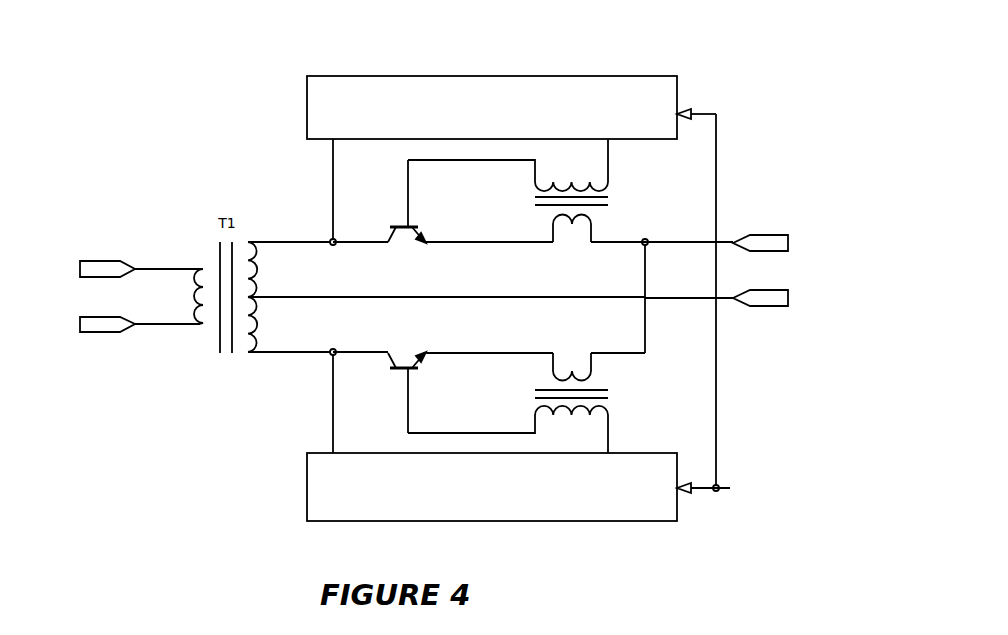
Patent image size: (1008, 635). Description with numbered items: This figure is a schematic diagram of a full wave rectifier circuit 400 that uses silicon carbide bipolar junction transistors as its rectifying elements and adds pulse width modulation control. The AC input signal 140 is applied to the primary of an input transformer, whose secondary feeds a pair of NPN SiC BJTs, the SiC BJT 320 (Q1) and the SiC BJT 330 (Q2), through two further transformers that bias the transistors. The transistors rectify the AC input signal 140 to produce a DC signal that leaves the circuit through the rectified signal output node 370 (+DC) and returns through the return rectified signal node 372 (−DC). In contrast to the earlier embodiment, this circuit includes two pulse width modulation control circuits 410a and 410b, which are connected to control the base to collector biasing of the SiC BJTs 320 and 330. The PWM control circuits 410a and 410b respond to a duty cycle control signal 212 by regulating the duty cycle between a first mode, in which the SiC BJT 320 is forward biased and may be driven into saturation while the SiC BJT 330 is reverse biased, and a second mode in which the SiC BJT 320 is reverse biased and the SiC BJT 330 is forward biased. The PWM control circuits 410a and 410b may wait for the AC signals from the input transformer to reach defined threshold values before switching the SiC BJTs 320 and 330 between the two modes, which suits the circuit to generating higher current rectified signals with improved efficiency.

The full wave rectifier circuit 400 is at (522, 245).
The AC input signal 140 is at (116, 296).
The pulse width modulation control circuit 410a is at (492, 107).
The pulse width modulation control circuit 410b is at (492, 487).
The SiC BJT 320 is at (560, 191).
The SiC BJT 330 is at (518, 402).
The rectified signal output node 370 is at (764, 233).
The return rectified signal node 372 is at (756, 313).
The duty cycle control signal 212 is at (749, 314).